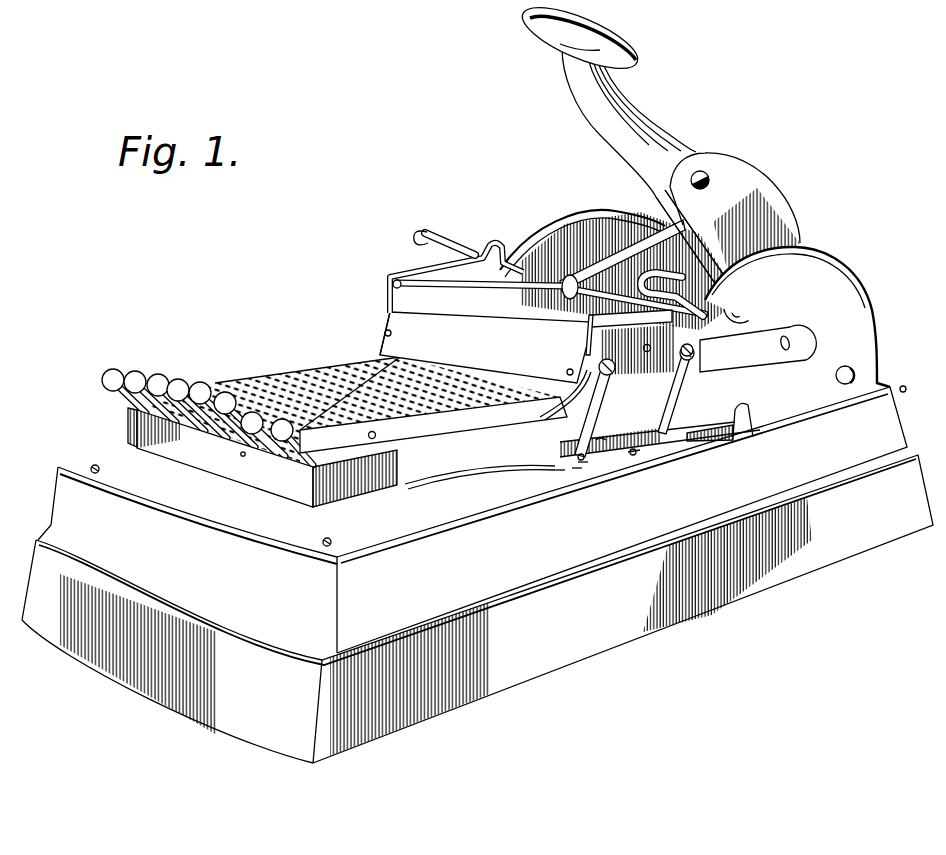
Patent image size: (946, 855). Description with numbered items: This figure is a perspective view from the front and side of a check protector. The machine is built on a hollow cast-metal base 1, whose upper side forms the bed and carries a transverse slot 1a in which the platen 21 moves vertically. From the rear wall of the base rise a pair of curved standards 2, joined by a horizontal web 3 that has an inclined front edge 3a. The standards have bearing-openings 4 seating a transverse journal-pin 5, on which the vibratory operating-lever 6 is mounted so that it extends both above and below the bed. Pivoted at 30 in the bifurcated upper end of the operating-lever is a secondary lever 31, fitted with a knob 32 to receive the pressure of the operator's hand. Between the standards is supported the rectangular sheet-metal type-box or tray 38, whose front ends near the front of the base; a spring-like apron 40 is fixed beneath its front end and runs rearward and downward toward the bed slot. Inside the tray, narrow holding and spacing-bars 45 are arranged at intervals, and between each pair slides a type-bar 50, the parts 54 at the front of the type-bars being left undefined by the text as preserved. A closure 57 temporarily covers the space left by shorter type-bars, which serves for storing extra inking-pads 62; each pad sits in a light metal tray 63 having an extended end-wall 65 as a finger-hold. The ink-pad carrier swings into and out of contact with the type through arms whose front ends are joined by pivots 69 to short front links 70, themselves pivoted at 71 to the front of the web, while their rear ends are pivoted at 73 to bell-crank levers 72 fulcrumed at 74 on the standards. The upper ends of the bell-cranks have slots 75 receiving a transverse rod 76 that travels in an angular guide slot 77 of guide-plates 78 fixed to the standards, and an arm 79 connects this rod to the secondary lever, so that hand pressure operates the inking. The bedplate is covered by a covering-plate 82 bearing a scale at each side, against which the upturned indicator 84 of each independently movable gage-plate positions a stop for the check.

The hollow cast-metal base 1 is at (797, 583).
The transverse slot or opening 1a is at (560, 473).
The curved standards 2 is at (837, 265).
The intermediate horizontal web 3 is at (580, 350).
The inclined front edge 3a is at (387, 343).
The bearing-openings 4 is at (855, 362).
The transverse journal-pin 5 is at (855, 377).
The vibratory operating-lever 6 is at (753, 192).
The platen 21 is at (577, 480).
The pivot 30 is at (705, 175).
The secondary lever 31 is at (582, 143).
The knob 32 is at (540, 42).
The type-box or tray 38 is at (128, 428).
The spring-like apron 40 is at (467, 474).
The holding and spacing-bars 45 is at (337, 368).
The sliding type-bar 50 is at (261, 380).
The setting levers 54 is at (140, 372).
The closure 57 is at (378, 435).
The extra inking-pads 62 is at (600, 414).
The light metal tray 63 is at (598, 445).
The extended end-wall 65 is at (632, 455).
The pivots 69 is at (583, 470).
The short front links 70 is at (588, 413).
The pivot 71 is at (613, 372).
The bell-crank levers 72 is at (458, 236).
The pivot 73 is at (697, 447).
The fulcrum 74 is at (698, 349).
The slot 75 is at (446, 232).
The transverse rod 76 is at (535, 292).
The angular guide slot 77 is at (417, 280).
The guide-plates 78 is at (393, 286).
The arm 79 is at (617, 257).
The covering-plate 82 is at (193, 520).
The upturned indicator 84 is at (745, 412).